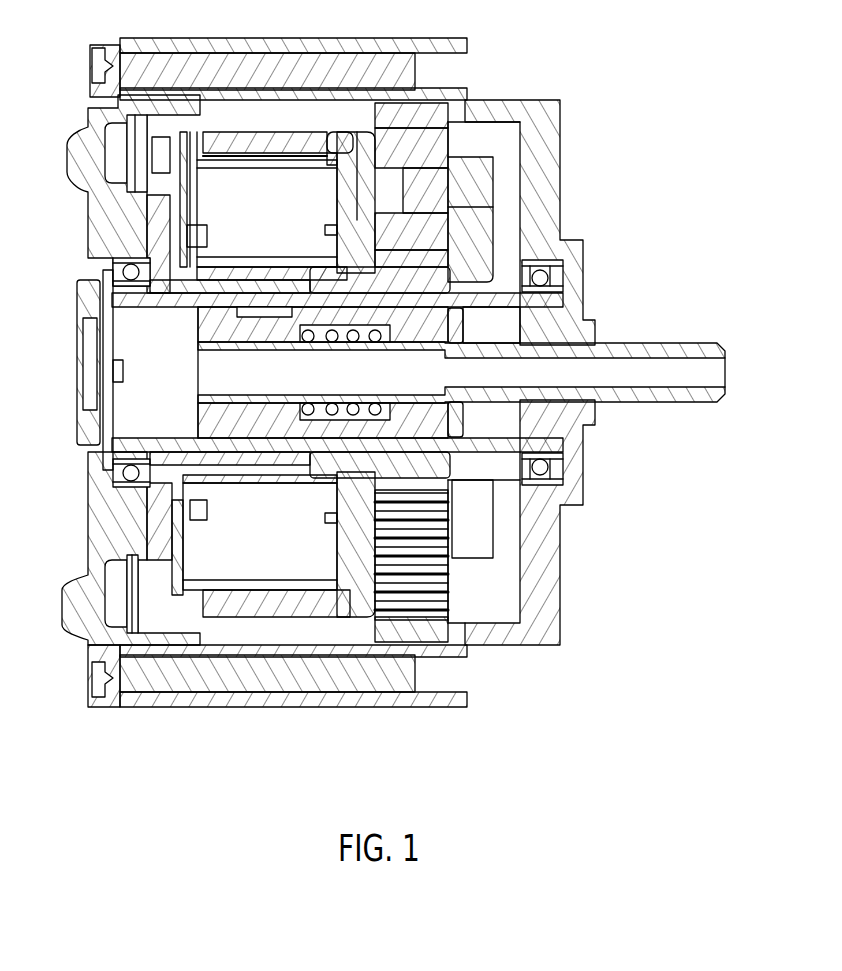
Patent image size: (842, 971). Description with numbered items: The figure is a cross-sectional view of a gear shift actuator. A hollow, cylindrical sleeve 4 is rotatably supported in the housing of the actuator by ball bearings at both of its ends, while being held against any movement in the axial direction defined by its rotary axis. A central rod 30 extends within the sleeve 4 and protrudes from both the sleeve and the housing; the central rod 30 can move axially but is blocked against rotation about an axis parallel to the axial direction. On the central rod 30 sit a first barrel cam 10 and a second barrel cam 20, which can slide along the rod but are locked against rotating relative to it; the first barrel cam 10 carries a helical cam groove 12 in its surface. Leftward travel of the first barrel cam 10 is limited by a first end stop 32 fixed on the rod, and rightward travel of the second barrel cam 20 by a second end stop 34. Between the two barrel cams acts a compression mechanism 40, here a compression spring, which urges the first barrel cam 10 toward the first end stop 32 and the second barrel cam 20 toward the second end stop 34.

The sleeve 4 is at (165, 438).
The first barrel cam 10 is at (257, 310).
The helical cam groove 12 is at (288, 440).
The second barrel cam 20 is at (477, 478).
The central rod 30 is at (655, 343).
The first end stop 32 is at (198, 333).
The second end stop 34 is at (465, 321).
The compression mechanism 40 is at (340, 328).